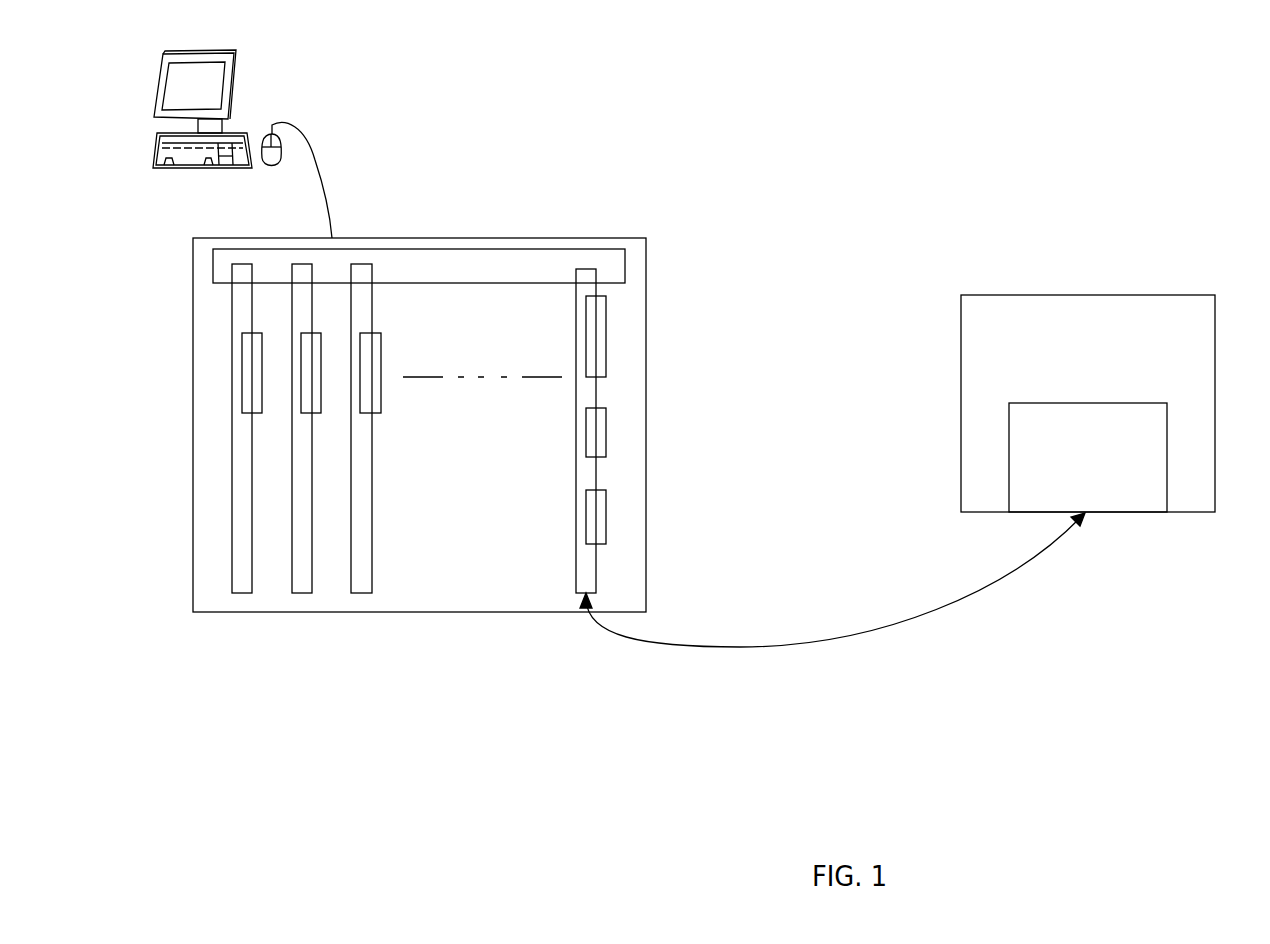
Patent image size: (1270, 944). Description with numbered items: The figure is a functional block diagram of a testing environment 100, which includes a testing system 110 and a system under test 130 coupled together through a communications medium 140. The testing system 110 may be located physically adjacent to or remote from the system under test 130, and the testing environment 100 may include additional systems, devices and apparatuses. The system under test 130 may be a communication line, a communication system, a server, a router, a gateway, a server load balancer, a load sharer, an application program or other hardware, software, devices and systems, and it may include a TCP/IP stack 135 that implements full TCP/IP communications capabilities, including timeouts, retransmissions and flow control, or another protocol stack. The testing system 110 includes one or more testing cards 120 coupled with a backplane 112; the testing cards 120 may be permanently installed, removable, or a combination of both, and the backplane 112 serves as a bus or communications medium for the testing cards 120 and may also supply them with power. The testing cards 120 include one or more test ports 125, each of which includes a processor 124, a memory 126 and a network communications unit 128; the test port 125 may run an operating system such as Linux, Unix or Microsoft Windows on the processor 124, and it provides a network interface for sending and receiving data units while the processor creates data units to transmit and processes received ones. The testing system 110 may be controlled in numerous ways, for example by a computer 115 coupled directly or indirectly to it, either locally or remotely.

The testing environment 100 is at (953, 152).
The computer 115 is at (237, 90).
The testing system 110 is at (370, 238).
The backplane 112 is at (419, 267).
The testing cards 120 is at (524, 512).
The processor 124 is at (606, 333).
The test port 125 is at (630, 374).
The memory 126 is at (606, 433).
The network communications unit 128 is at (655, 504).
The system under test 130 is at (1088, 403).
The TCP/IP stack 135 is at (1088, 457).
The communications medium 140 is at (740, 648).